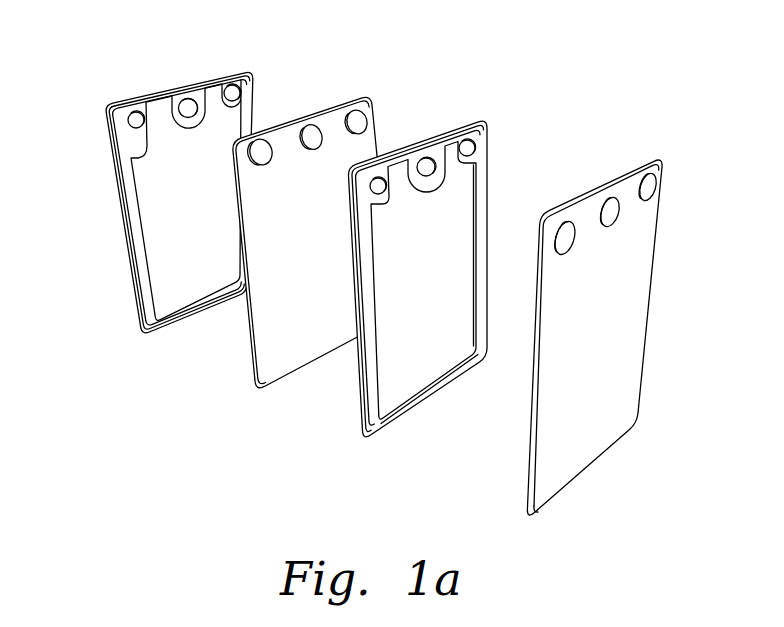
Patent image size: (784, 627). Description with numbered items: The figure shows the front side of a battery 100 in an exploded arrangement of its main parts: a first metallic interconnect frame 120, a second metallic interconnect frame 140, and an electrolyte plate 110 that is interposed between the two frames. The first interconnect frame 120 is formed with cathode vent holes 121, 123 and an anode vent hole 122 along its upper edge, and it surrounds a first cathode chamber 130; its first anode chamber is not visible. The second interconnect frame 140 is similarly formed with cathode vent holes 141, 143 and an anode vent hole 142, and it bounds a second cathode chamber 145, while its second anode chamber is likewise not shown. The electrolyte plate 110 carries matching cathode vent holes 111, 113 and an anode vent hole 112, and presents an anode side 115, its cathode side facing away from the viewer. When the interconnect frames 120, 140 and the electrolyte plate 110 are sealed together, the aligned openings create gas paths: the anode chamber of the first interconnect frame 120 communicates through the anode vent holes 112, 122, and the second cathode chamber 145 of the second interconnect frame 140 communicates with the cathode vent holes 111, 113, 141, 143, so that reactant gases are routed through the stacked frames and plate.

The battery 100 is at (606, 60).
The electrolyte plate 110 is at (470, 273).
The cathode vent hole 111 is at (366, 112).
The anode vent hole 112 is at (319, 126).
The cathode vent hole 113 is at (263, 141).
The anode side 115 is at (287, 351).
The first metallic interconnect frame 120 is at (470, 282).
The cathode vent hole 121 is at (449, 149).
The anode vent hole 122 is at (447, 145).
The cathode vent hole 123 is at (388, 197).
The first cathode chamber 130 is at (417, 374).
The second metallic interconnect frame 140 is at (139, 201).
The cathode vent hole 141 is at (208, 86).
The anode vent hole 142 is at (164, 86).
The cathode vent hole 143 is at (143, 150).
The second cathode chamber 145 is at (185, 296).